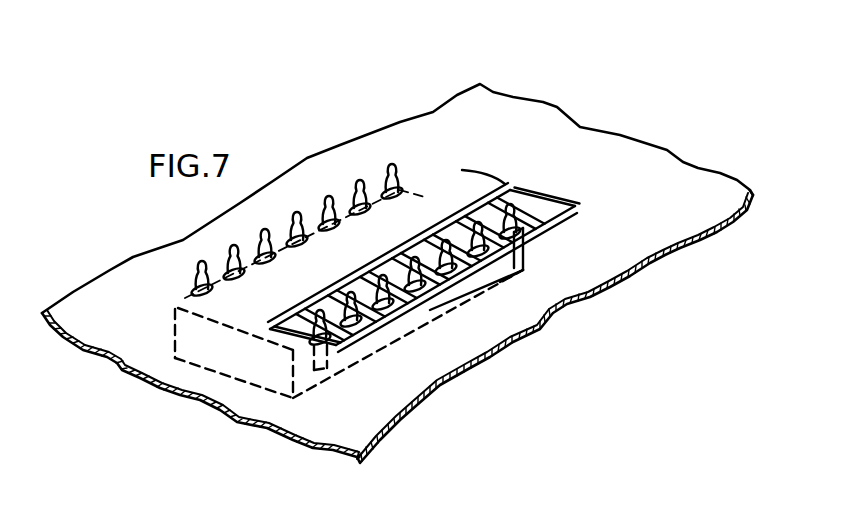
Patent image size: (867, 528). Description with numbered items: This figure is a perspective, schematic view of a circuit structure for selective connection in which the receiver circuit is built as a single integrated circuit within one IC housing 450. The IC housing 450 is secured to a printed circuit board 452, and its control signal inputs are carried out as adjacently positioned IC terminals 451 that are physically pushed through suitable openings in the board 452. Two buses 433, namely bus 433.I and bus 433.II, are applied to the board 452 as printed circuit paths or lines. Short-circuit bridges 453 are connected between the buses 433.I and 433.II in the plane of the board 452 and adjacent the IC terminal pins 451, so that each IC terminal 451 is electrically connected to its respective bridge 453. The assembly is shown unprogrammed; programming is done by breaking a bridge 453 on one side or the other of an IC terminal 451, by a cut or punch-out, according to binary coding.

The buses 433 is at (415, 246).
The bus 433.I is at (289, 301).
The bus 433.II is at (543, 238).
The IC terminals 451 is at (470, 228).
The short-circuit bridges 453 is at (373, 266).
The IC housing 450 is at (215, 353).
The printed circuit board 452 is at (307, 418).